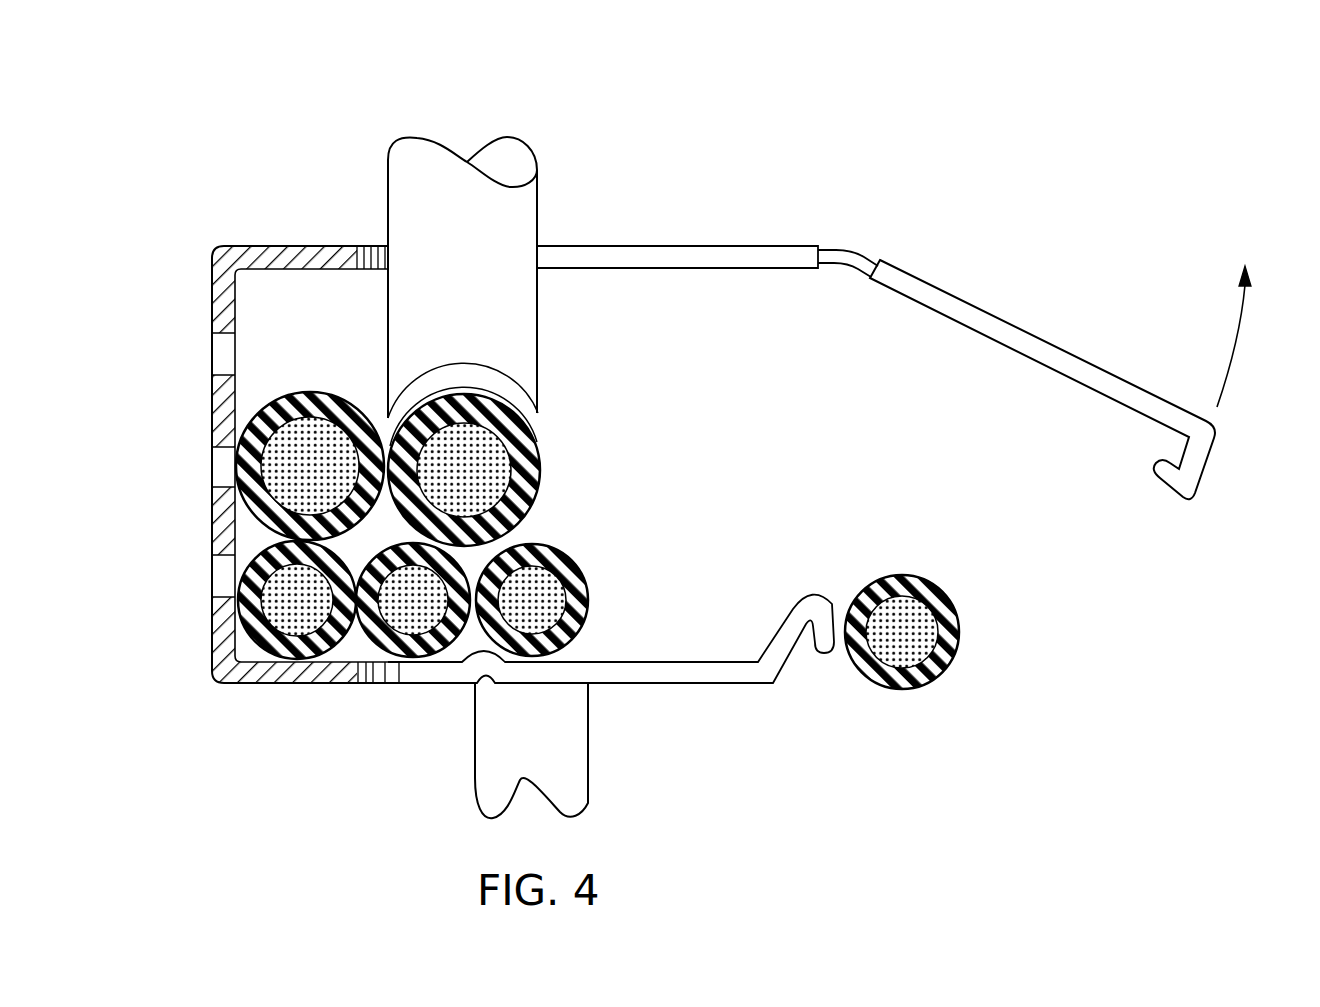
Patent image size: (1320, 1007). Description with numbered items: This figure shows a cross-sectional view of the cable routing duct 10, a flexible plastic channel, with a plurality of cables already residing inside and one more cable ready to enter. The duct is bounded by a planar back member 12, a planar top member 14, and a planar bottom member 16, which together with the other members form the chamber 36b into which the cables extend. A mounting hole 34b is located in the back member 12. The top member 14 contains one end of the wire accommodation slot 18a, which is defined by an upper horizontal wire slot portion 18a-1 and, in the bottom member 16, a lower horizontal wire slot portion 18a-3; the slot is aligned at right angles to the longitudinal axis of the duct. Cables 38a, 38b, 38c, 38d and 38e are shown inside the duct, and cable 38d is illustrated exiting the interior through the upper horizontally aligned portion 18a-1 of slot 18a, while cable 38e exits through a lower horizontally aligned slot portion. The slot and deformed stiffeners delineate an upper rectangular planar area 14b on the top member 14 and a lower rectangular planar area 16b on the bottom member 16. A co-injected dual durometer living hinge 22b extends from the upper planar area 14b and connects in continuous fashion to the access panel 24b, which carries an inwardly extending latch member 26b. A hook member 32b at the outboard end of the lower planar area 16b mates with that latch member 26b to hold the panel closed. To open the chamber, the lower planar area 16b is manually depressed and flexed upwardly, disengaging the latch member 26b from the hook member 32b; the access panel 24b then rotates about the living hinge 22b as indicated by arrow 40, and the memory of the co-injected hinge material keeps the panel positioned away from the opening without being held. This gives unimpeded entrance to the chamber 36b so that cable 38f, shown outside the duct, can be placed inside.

The cable routing duct 10 is at (102, 138).
The planar back member 12 is at (222, 297).
The planar top member 14 is at (283, 247).
The upper rectangular planar area 14b is at (615, 255).
The planar bottom member 16 is at (298, 683).
The lower rectangular planar area 16b is at (611, 673).
The wire accommodation slot 18a is at (680, 207).
The upper horizontal wire slot portion 18a-1 is at (678, 207).
The lower horizontal wire slot portion 18a-3 is at (611, 673).
The living hinge 22b is at (858, 255).
The access panel 24b is at (1042, 397).
The latch member 26b is at (1180, 485).
The hook member 32b is at (805, 608).
The mounting hole 34b is at (222, 580).
The chamber 36b is at (674, 459).
The cable 38a is at (262, 425).
The cable 38b is at (258, 650).
The cable 38c is at (438, 655).
The cable 38d is at (538, 488).
The cable 38e is at (578, 563).
The cable 38f is at (907, 690).
The arrow 40 is at (1233, 365).